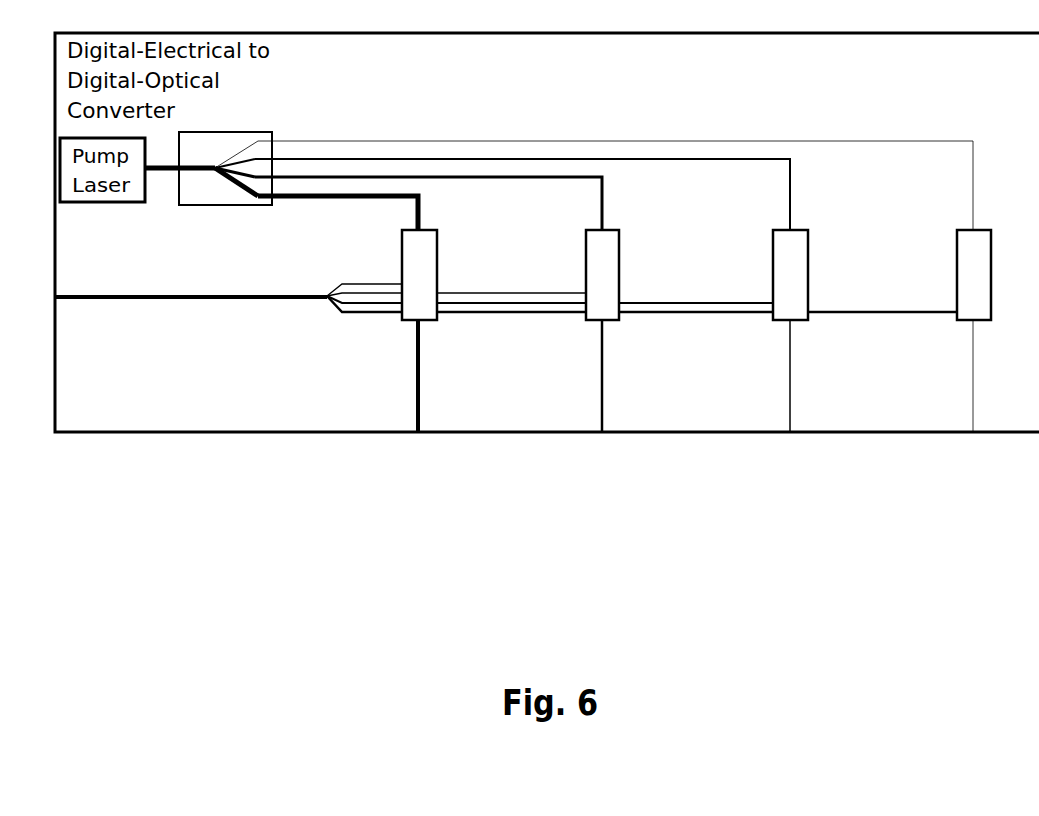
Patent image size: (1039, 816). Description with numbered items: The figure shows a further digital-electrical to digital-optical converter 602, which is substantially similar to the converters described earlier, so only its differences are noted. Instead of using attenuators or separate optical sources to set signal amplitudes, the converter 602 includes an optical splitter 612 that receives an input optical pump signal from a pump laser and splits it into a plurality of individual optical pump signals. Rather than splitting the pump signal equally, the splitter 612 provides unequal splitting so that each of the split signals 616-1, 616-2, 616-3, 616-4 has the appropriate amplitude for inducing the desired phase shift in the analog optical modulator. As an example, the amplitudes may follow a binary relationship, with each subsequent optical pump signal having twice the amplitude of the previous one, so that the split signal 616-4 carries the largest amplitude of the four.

The digital-electrical to digital-optical converter 602 is at (547, 232).
The optical splitter 612 is at (222, 207).
The split signal 616-1 is at (365, 194).
The split signal 616-2 is at (542, 177).
The split signal 616-3 is at (740, 160).
The split signal 616-4 is at (918, 143).